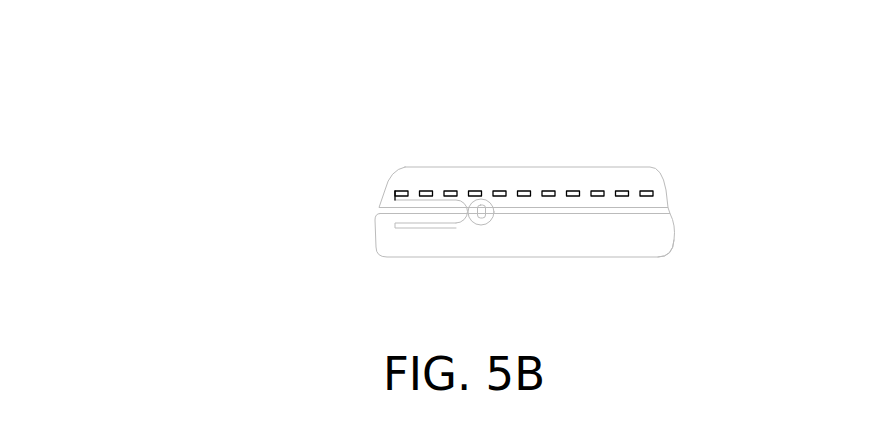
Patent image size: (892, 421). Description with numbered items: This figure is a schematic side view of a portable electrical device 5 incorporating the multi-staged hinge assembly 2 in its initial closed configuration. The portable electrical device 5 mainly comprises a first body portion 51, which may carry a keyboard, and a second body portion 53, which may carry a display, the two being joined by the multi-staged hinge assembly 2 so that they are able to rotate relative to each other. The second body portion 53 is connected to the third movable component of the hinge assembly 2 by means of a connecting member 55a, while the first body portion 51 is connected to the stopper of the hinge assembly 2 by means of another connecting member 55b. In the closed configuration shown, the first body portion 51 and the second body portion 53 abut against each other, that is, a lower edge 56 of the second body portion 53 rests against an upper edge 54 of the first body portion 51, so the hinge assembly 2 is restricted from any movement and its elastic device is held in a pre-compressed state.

The portable electrical device 5 is at (432, 66).
The multi-staged hinge assembly 2 is at (483, 195).
The first body portion 51 is at (453, 257).
The second body portion 53 is at (408, 168).
The upper edge 54 is at (668, 217).
The connecting member 55a is at (397, 200).
The connecting member 55b is at (398, 223).
The lower edge 56 is at (668, 208).